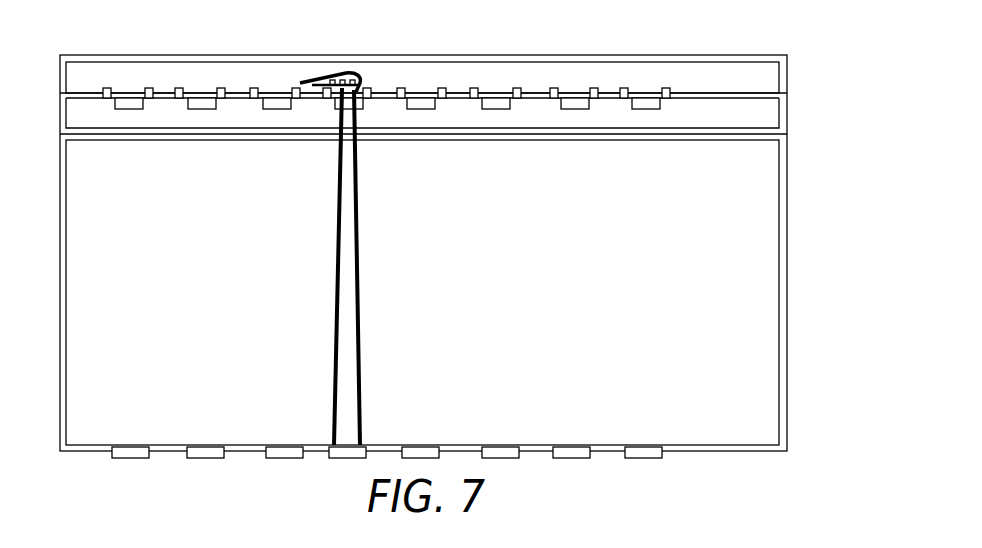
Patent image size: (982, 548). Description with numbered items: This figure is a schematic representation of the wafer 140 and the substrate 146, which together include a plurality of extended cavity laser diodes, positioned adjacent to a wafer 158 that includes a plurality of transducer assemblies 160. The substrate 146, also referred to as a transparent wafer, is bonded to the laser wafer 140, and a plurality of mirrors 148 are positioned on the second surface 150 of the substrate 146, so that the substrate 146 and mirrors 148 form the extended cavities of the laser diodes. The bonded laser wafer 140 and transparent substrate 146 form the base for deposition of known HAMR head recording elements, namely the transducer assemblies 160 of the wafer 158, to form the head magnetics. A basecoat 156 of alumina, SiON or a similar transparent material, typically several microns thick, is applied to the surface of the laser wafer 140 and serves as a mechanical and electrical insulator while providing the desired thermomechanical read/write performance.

The wafer 140 is at (768, 117).
The substrate 146 is at (762, 332).
The mirrors 148 is at (572, 453).
The second surface 150 is at (742, 455).
The basecoat 156 is at (760, 94).
The wafer 158 is at (720, 72).
The transducer assemblies 160 is at (345, 73).